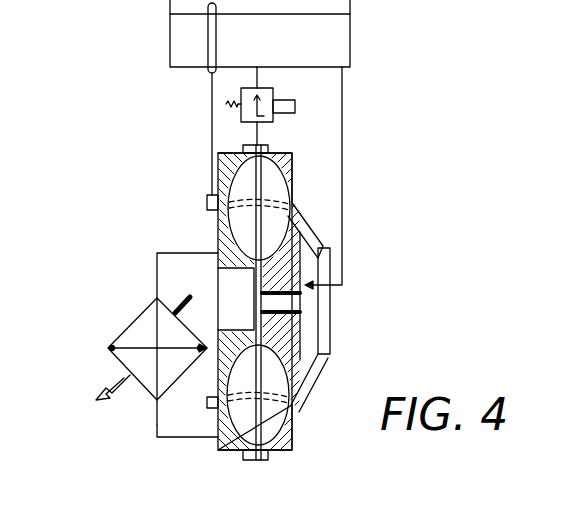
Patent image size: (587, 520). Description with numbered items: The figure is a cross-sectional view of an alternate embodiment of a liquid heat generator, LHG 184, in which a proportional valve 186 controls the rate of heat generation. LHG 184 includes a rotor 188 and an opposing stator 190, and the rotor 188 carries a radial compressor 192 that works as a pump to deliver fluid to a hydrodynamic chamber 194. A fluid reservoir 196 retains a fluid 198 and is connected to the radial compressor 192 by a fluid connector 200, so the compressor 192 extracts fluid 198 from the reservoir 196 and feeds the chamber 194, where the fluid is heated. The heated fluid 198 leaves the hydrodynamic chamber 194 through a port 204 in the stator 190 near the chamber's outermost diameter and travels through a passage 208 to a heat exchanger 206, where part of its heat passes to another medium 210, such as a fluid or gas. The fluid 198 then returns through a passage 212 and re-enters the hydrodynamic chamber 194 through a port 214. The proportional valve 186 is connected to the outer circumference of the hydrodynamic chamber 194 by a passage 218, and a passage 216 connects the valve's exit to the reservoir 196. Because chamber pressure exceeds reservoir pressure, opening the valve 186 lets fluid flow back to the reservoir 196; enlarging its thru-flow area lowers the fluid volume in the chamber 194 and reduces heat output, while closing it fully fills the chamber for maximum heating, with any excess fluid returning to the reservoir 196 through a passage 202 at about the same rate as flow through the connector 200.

The liquid heat generator 184 is at (118, 160).
The proportional valve 186 is at (296, 105).
The rotor 188 is at (293, 178).
The stator 190 is at (212, 203).
The radial compressor 192 is at (302, 240).
The hydrodynamic chamber 194 is at (230, 173).
The fluid reservoir 196 is at (350, 54).
The fluid 198 is at (332, 37).
The fluid connector 200 is at (343, 152).
The passage 202 is at (210, 90).
The port 204 is at (227, 448).
The heat exchanger 206 is at (132, 315).
The passage 208 is at (157, 424).
The medium 210 is at (104, 382).
The passage 212 is at (157, 264).
The port 214 is at (253, 248).
The passage 216 is at (259, 80).
The passage 218 is at (260, 134).